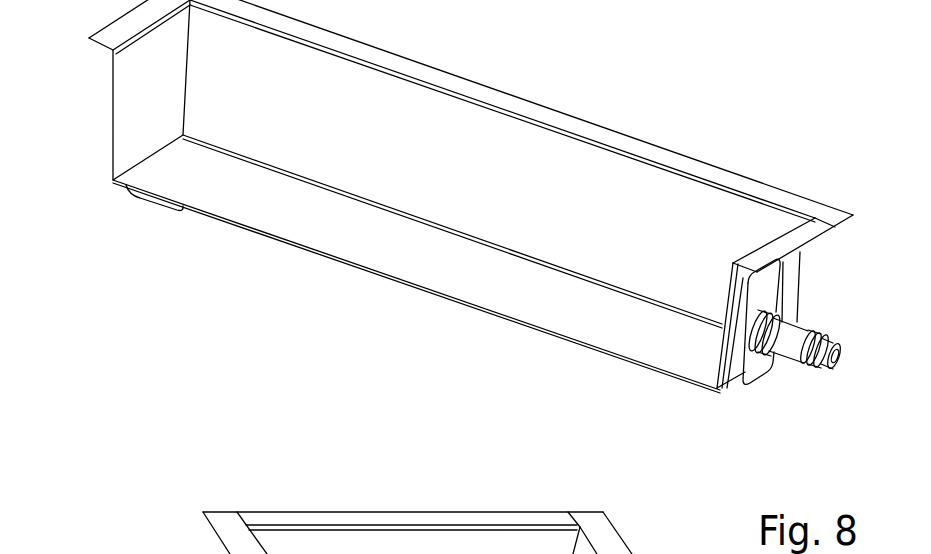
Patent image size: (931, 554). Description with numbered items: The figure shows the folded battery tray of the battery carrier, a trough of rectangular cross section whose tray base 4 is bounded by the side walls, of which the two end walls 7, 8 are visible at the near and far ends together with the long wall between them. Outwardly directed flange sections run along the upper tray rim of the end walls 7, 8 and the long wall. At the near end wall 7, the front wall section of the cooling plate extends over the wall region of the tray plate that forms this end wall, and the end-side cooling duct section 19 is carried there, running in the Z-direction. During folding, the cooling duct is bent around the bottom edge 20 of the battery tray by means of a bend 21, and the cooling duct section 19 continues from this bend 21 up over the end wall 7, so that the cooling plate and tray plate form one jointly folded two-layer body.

The tray base 4 is at (408, 258).
The end wall 7 is at (723, 340).
The end wall 8 is at (128, 135).
The cooling duct section 19 is at (777, 295).
The bottom edge 20 is at (720, 391).
The bend 21 is at (752, 380).